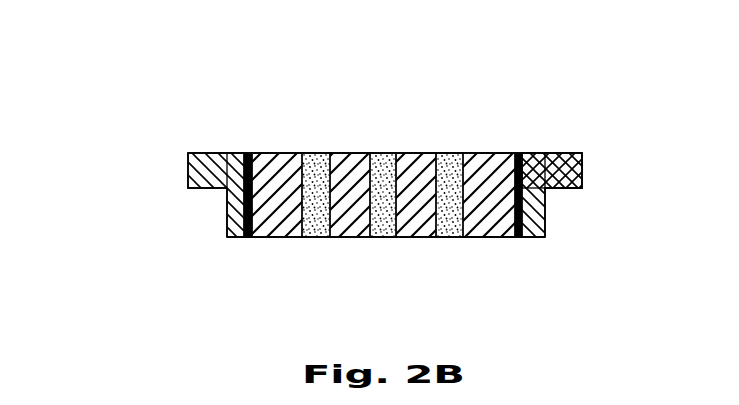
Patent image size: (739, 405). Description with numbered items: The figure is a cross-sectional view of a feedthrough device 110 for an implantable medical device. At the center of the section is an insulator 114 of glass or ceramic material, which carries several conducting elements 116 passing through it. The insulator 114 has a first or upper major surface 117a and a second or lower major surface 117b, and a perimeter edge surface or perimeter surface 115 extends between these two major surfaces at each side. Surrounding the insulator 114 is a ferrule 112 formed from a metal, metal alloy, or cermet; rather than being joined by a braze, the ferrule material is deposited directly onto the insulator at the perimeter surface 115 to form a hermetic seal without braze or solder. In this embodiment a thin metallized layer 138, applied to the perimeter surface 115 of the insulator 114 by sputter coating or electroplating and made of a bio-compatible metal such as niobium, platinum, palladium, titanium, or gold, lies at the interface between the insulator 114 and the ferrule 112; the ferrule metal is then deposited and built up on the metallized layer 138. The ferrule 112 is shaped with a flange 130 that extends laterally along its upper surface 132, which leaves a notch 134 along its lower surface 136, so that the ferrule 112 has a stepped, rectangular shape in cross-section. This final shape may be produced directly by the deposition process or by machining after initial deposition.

The feedthrough device 110 is at (134, 104).
The ferrule 112 is at (216, 152).
The insulator 114 is at (277, 152).
The perimeter surface 115 is at (571, 152).
The conducting elements 116 is at (317, 240).
The upper major surface 117a is at (294, 142).
The lower major surface 117b is at (268, 246).
The flange 130 is at (185, 172).
The upper surface 132 is at (452, 140).
The notch 134 is at (210, 208).
The lower surface 136 is at (502, 245).
The metallized layer 138 is at (247, 152).